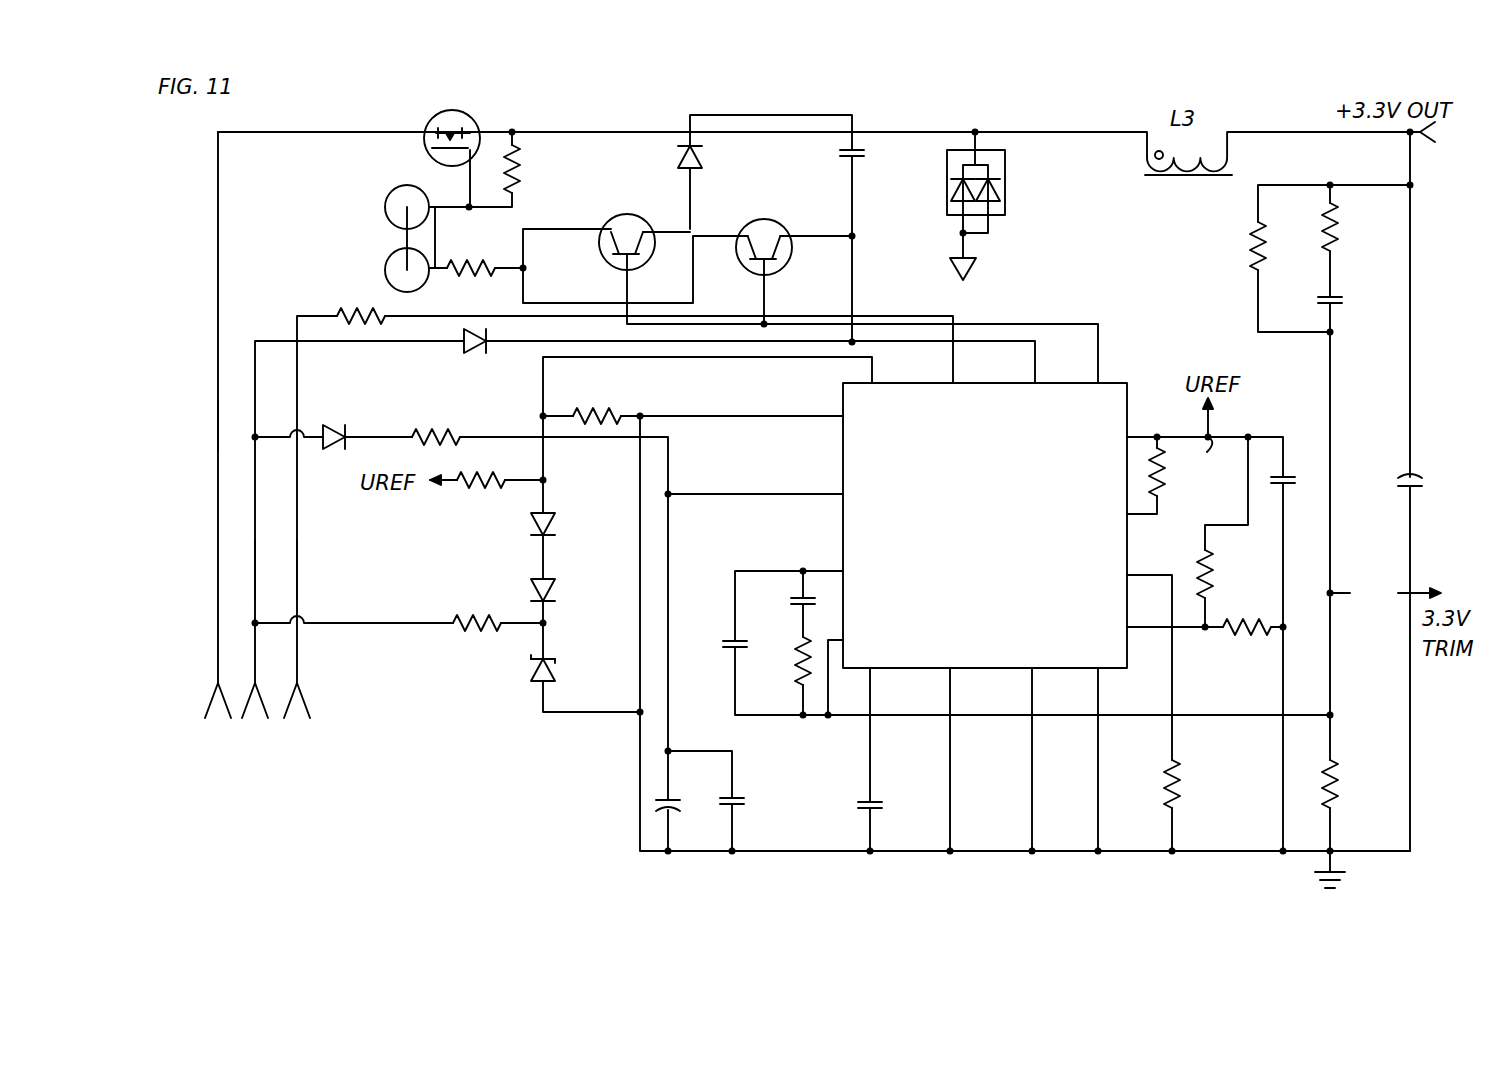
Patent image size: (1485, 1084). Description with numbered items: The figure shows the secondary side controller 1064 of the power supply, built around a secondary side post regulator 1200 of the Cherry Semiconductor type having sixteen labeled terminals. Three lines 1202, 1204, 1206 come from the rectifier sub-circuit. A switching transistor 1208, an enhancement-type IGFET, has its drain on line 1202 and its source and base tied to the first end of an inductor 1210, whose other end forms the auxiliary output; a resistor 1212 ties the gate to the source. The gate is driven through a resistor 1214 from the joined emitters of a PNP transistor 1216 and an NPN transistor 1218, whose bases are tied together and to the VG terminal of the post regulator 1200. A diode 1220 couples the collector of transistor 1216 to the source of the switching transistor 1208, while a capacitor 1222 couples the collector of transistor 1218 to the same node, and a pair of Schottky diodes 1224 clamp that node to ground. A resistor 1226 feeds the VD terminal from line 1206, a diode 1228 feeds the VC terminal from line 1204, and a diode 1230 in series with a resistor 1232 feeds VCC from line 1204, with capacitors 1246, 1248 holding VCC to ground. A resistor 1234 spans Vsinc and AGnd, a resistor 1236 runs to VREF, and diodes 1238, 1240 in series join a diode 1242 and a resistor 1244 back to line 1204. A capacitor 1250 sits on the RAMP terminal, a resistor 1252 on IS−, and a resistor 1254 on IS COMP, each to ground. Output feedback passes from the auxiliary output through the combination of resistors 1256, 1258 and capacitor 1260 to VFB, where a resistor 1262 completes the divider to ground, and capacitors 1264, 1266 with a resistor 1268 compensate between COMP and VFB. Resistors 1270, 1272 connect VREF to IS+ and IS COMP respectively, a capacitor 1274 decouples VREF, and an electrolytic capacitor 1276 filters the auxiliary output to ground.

The secondary side controller 1064 is at (963, 109).
The secondary side post regulator 1200 is at (1132, 380).
The line 1202 is at (217, 515).
The line 1204 is at (252, 572).
The line 1206 is at (300, 579).
The switching transistor 1208 is at (471, 114).
The inductor 1210 is at (1212, 153).
The resistor 1212 is at (522, 166).
The resistor 1214 is at (455, 262).
The PNP transistor 1216 is at (611, 218).
The NPN transistor 1218 is at (776, 222).
The diode 1220 is at (702, 159).
The capacitor 1222 is at (864, 159).
The pair of Schottky diodes 1224 is at (1005, 169).
The resistor 1226 is at (362, 301).
The diode 1228 is at (459, 364).
The diode 1230 is at (333, 426).
The resistor 1232 is at (424, 428).
The resistor 1234 is at (603, 407).
The resistor 1236 is at (484, 502).
The diode 1238 is at (552, 512).
The diode 1240 is at (554, 579).
The diode 1242 is at (553, 667).
The resistor 1244 is at (498, 612).
The capacitor 1246 is at (671, 794).
The capacitor 1248 is at (744, 794).
The capacitor 1250 is at (875, 796).
The resistor 1252 is at (1180, 794).
The resistor 1254 is at (1244, 638).
The resistor 1256 is at (1248, 237).
The resistor 1258 is at (1338, 237).
The capacitor 1260 is at (1342, 300).
The resistor 1262 is at (1338, 794).
The capacitor 1264 is at (730, 636).
The capacitor 1266 is at (792, 606).
The resistor 1268 is at (802, 672).
The resistor 1270 is at (1191, 472).
The resistor 1272 is at (1212, 572).
The capacitor 1274 is at (1292, 470).
The electrolytic capacitor 1276 is at (1400, 474).